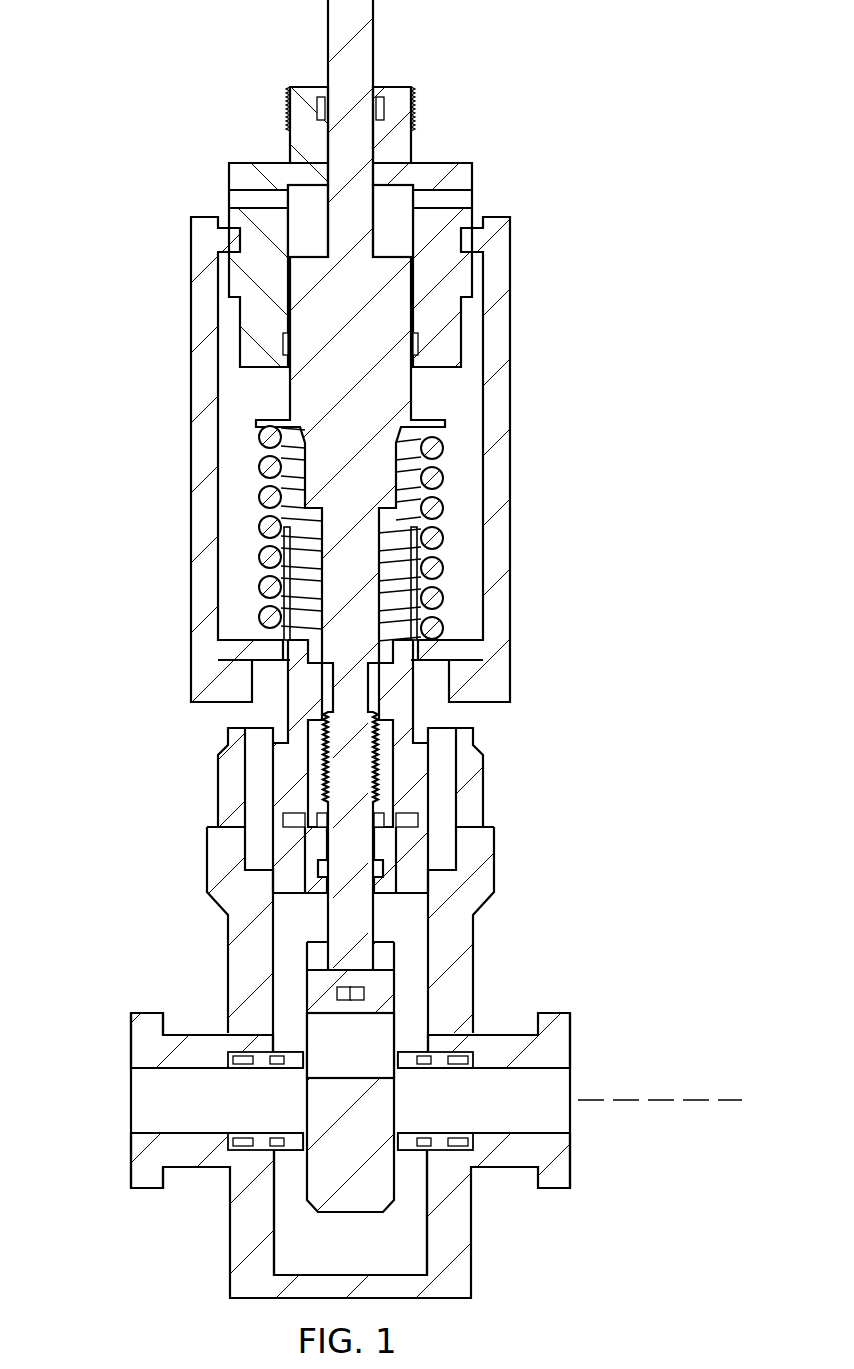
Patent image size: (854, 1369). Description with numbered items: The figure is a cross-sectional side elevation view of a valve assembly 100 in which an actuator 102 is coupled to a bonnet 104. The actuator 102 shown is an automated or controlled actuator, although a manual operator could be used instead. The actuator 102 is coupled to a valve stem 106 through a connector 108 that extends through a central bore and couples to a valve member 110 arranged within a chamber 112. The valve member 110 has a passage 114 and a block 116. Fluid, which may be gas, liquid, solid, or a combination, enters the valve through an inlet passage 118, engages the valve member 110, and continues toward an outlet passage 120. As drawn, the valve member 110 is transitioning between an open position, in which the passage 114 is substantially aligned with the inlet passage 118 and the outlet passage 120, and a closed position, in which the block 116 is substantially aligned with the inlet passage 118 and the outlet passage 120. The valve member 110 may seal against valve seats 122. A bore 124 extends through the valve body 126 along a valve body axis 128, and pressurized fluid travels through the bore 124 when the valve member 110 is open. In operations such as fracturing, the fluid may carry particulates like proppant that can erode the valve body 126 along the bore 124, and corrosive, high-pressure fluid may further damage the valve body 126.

The valve assembly 100 is at (136, 929).
The actuator 102 is at (172, 456).
The bonnet 104 is at (502, 792).
The valve stem 106 is at (357, 697).
The connector 108 is at (362, 622).
The valve member 110 is at (292, 1184).
The chamber 112 is at (418, 1247).
The passage 114 is at (385, 1032).
The block 116 is at (385, 1188).
The inlet passage 118 is at (170, 1143).
The outlet passage 120 is at (572, 1118).
The valve seats 122 is at (417, 1062).
The bore 124 is at (147, 1069).
The valve body 126 is at (463, 933).
The valve body axis 128 is at (655, 1100).